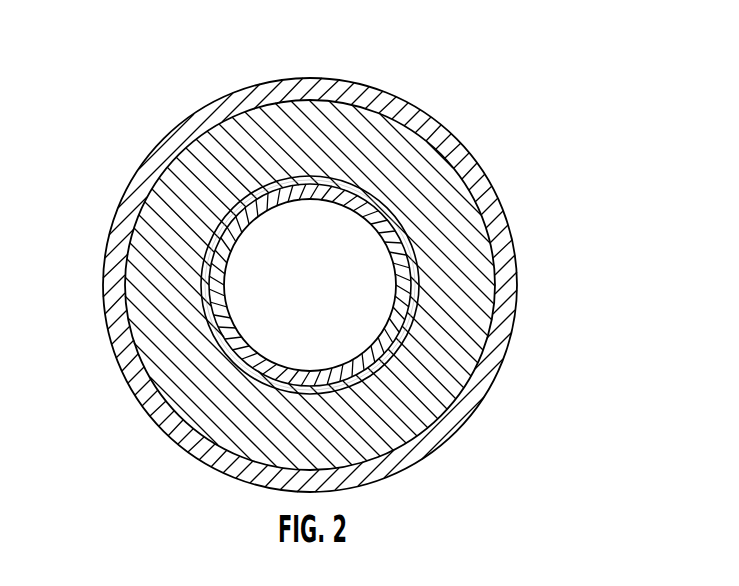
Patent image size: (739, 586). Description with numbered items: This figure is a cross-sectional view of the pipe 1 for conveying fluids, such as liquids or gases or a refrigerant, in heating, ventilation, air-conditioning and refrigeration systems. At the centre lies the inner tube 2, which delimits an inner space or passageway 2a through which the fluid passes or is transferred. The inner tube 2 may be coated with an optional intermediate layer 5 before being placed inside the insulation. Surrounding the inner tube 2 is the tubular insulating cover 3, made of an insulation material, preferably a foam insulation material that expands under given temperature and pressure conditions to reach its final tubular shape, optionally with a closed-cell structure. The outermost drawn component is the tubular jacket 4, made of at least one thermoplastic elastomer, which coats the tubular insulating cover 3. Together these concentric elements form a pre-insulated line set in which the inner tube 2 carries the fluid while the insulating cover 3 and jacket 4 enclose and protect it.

The pipe 1 is at (352, 264).
The inner tube 2 is at (410, 309).
The inner space or passageway 2a is at (280, 262).
The tubular insulating cover 3 is at (397, 152).
The tubular jacket 4 is at (510, 227).
The intermediate layer 5 is at (213, 262).